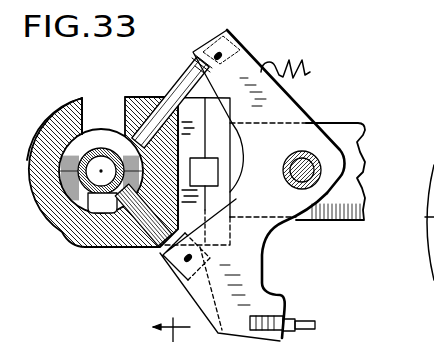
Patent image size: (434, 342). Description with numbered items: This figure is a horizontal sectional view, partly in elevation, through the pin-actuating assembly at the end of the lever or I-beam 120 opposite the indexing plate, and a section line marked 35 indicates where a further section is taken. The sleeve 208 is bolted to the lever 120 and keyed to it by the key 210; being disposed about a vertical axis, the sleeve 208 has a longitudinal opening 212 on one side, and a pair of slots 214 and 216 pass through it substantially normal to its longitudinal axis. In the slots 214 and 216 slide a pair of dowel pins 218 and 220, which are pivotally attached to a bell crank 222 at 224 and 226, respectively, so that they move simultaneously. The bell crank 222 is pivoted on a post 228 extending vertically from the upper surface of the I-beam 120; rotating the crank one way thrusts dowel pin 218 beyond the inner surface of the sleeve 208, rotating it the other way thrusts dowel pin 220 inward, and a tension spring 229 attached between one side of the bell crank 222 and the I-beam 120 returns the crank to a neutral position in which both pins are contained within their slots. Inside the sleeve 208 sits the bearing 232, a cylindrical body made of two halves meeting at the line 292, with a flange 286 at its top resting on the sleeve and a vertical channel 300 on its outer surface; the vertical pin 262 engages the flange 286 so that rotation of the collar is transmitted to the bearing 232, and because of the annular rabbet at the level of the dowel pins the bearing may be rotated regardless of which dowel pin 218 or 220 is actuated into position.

The lever 120 is at (357, 138).
The sleeve 208 is at (77, 228).
The key 210 is at (212, 182).
The longitudinal opening 212 is at (84, 99).
The slot 214 is at (112, 233).
The slot 216 is at (148, 96).
The dowel pin 218 is at (147, 245).
The dowel pin 220 is at (184, 78).
The bell crank 222 is at (257, 250).
The pivotal attachment 224 is at (163, 254).
The pivotal attachment 226 is at (196, 60).
The post 228 is at (310, 158).
The tension spring 229 is at (308, 63).
The bearing 232 is at (52, 120).
The vertical pin 262 is at (131, 341).
The flange 286 is at (45, 337).
The line 292 is at (60, 206).
The vertical channel 300 is at (230, 263).
The section line 35 is at (171, 322).